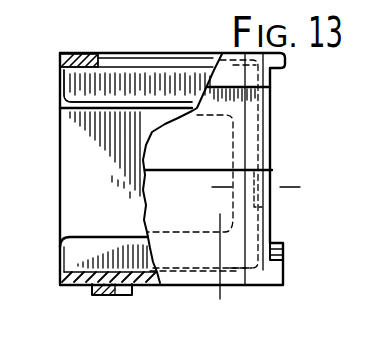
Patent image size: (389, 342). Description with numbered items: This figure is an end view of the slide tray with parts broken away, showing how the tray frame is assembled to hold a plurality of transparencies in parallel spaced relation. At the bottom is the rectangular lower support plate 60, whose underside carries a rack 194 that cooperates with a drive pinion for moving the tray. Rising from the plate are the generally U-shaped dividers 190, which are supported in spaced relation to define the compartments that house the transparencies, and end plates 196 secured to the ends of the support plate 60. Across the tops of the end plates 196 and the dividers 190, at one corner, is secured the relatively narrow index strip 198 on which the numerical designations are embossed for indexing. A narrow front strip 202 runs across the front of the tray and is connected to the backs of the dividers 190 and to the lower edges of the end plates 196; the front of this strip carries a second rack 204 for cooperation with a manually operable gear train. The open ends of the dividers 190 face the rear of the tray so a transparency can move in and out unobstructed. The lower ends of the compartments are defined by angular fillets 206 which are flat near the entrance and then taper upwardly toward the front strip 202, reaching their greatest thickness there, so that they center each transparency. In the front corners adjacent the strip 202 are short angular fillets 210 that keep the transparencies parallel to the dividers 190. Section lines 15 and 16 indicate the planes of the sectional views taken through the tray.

The rack 194 is at (248, 108).
The index strip 198 is at (78, 56).
The divider 190 is at (150, 80).
The end plate 196 is at (82, 141).
The lower support plate 60 is at (146, 283).
The angular fillet 210 is at (256, 204).
The front strip 202 is at (265, 220).
The rack 204 is at (278, 271).
The angular fillet 206 is at (236, 270).
The section line 15- 15 is at (292, 182).
The section line 16- 16 is at (217, 296).